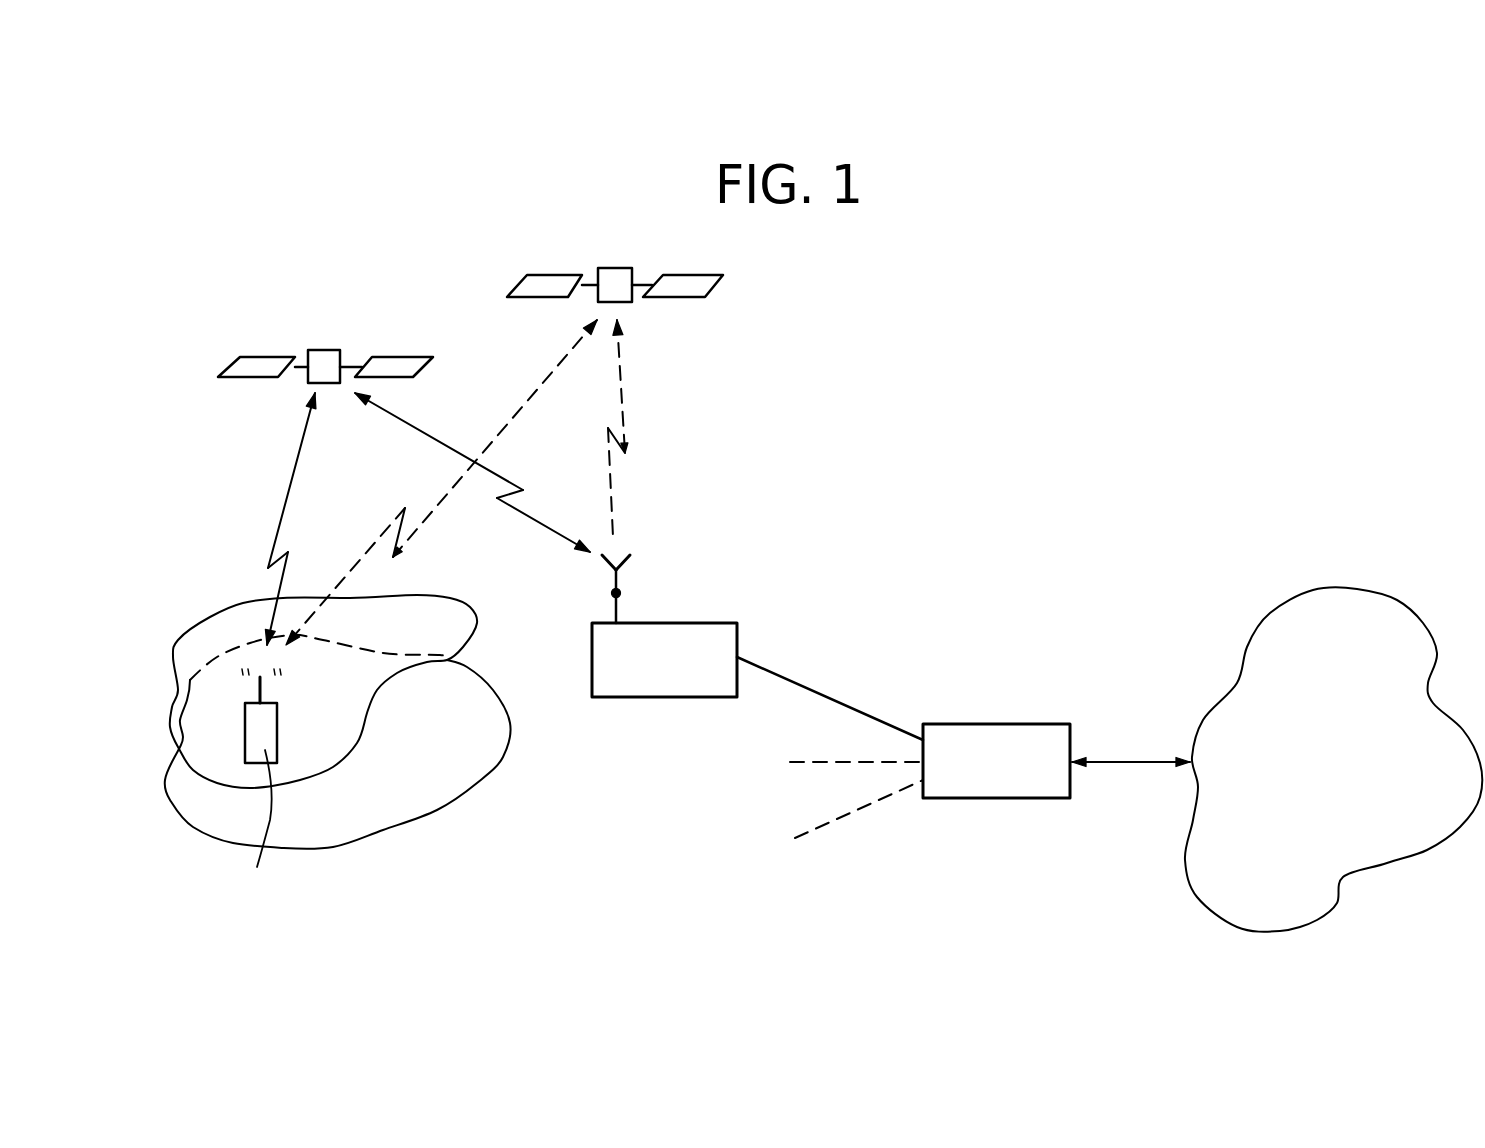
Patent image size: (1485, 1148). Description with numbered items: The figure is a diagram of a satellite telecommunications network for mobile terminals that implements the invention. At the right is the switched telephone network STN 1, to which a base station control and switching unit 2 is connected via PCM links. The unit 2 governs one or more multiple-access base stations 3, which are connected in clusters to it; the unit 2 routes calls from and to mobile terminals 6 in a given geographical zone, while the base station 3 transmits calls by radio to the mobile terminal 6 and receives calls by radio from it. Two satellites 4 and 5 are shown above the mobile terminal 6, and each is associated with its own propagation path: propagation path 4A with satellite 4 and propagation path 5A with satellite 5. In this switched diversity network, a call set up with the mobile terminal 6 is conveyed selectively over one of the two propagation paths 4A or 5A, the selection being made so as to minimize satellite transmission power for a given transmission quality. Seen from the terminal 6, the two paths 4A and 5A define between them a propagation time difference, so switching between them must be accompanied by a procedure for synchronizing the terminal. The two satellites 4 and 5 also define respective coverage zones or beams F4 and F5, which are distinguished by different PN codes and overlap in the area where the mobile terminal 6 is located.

The switched telephone network (STN) 1 is at (1355, 617).
The base station control and switching unit 2 is at (1040, 728).
The multiple-access base station 3 is at (702, 637).
The satellite 4 is at (547, 288).
The satellite 5 is at (403, 365).
The mobile terminal 6 is at (265, 730).
The propagation path 4A is at (610, 458).
The propagation path 5A is at (387, 413).
The coverage zone or beam F4 is at (430, 787).
The coverage zone or beam F5 is at (448, 615).